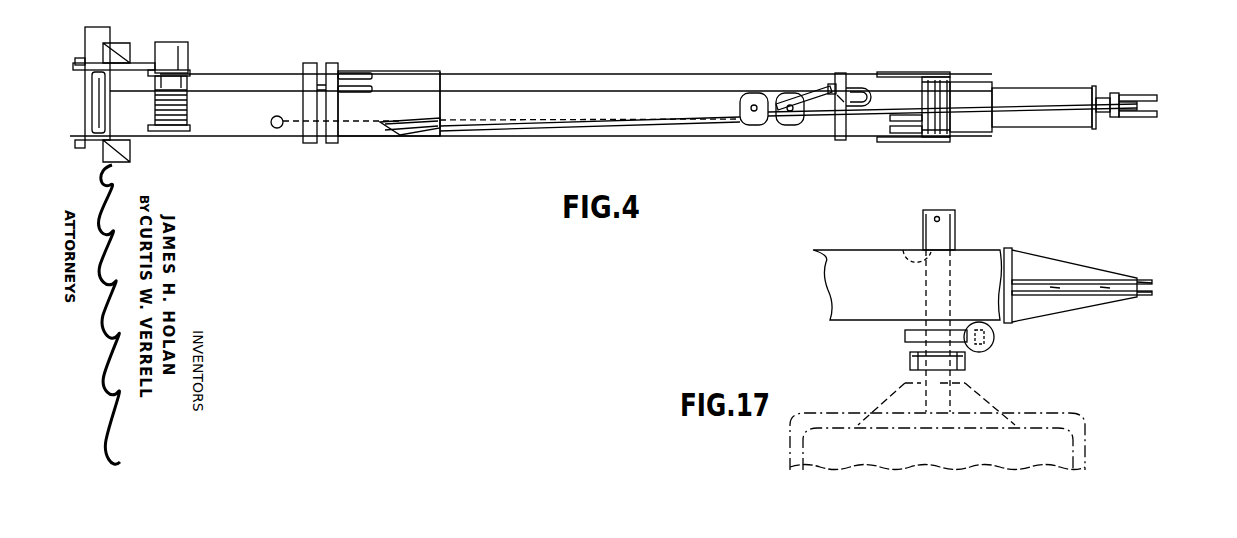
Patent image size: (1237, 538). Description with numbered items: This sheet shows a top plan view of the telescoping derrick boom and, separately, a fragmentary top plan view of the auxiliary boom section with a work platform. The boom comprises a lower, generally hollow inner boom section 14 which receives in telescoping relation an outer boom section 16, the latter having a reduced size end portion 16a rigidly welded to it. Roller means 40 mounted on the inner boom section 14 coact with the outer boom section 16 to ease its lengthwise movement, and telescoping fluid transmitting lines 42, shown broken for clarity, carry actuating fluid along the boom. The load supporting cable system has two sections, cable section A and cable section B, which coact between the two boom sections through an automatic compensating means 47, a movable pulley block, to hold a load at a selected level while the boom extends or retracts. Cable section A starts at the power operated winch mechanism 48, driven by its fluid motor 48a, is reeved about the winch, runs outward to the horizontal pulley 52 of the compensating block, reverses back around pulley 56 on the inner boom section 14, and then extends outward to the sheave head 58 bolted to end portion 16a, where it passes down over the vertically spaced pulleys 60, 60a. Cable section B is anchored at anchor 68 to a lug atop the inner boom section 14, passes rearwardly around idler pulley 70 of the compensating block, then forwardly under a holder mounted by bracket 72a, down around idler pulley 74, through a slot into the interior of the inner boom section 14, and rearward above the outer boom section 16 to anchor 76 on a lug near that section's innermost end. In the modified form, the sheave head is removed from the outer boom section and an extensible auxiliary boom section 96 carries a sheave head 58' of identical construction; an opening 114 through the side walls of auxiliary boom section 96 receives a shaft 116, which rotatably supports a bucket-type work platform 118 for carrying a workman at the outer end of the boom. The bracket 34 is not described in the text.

In FIG. 4, the inner boom section 14 is at (670, 75).
In FIG. 4, the cable section A is at (275, 75).
In FIG. 4, the bracket 34 is at (100, 98).
In FIG. 4, the winch mechanism 48 is at (180, 128).
In FIG. 4, the fluid motor 48a is at (185, 60).
In FIG. 4, the telescoping fluid transmitting lines 42 is at (364, 90).
In FIG. 4, the anchor 76 is at (278, 128).
In FIG. 4, the pulley 56 is at (398, 135).
In FIG. 4, the horizontal pulley 52 is at (755, 93).
In FIG. 4, the idler pulley 70 is at (790, 126).
In FIG. 4, the automatic compensating means 47 is at (782, 80).
In FIG. 4, the bracket 72a is at (842, 73).
In FIG. 4, the anchor 68 is at (858, 95).
In FIG. 4, the idler pulley 74 is at (905, 141).
In FIG. 4, the cable section B is at (868, 136).
In FIG. 4, the roller means 40 is at (950, 90).
In FIG. 4, the outer boom section 16 is at (970, 133).
In FIG. 4, the reduced size end portion 16a is at (1028, 118).
In FIG. 4, the pulley 60 is at (1116, 95).
In FIG. 17, the pulley 60 is at (1043, 290).
In FIG. 4, the sheave head 58 is at (1159, 67).
In FIG. 17, the opening 114 is at (905, 257).
In FIG. 17, the auxiliary boom section 96 is at (880, 312).
In FIG. 17, the sheave head 58' is at (1070, 278).
In FIG. 17, the pulley 60a is at (1150, 283).
In FIG. 17, the shaft 116 is at (908, 343).
In FIG. 17, the work platform 118 is at (890, 396).